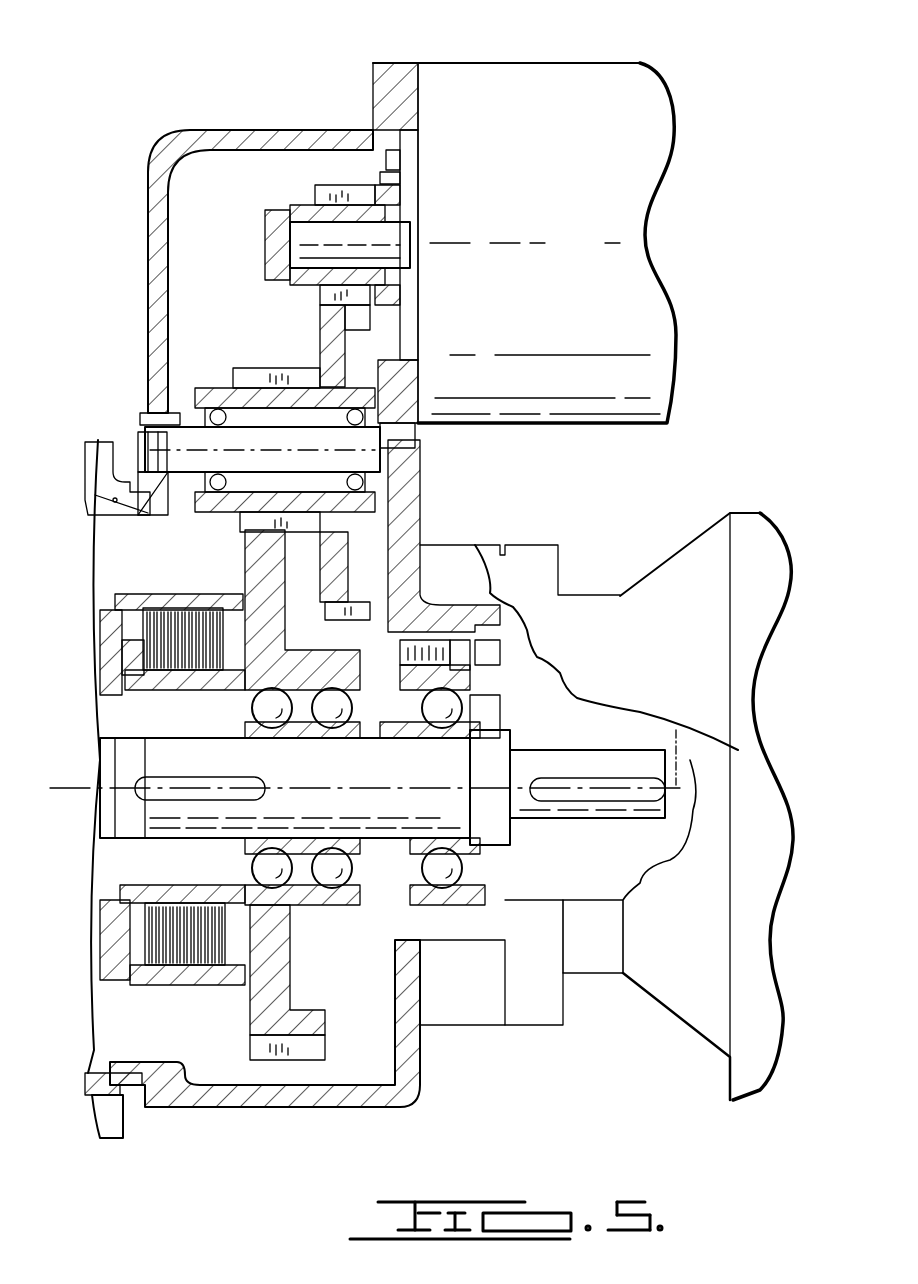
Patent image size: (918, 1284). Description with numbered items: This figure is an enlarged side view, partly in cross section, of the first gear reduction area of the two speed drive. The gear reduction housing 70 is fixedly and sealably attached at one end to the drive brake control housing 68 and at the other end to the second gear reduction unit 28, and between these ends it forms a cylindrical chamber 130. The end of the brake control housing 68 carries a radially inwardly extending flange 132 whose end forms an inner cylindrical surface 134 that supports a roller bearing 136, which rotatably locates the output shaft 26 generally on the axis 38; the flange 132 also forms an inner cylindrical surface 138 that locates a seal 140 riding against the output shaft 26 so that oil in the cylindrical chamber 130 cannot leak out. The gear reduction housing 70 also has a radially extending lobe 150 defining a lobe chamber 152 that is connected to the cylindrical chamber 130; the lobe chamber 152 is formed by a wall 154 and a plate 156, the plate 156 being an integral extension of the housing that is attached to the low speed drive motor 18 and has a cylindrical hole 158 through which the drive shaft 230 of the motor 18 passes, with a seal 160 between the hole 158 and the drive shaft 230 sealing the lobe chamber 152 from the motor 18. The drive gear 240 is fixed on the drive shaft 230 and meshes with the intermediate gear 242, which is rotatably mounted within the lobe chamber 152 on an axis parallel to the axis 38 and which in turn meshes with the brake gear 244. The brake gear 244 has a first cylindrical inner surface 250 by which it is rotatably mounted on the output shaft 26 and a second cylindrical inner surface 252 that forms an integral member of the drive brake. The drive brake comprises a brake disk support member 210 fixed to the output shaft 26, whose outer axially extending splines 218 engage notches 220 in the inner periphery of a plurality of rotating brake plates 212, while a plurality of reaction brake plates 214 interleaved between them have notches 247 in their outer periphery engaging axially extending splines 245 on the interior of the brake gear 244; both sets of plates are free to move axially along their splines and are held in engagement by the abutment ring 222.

The low speed drive motor 18 is at (592, 255).
The output shaft 26 is at (665, 808).
The second gear reduction unit 28 is at (760, 882).
The axis 38 is at (680, 730).
The drive brake control housing 68 is at (96, 445).
The gear reduction housing 70 is at (215, 1107).
The cylindrical chamber 130 is at (252, 795).
The radially inwardly extending flange 132 is at (405, 1022).
The inner cylindrical surface 134 is at (455, 892).
The roller bearing 136 is at (446, 860).
The inner cylindrical surface 138 is at (500, 875).
The seal 140 is at (490, 735).
The radially extending lobe 150 is at (221, 258).
The lobe chamber 152 is at (255, 337).
The wall 154 is at (162, 148).
The plate 156 is at (400, 72).
The cylindrical hole 158 is at (400, 170).
The seal 160 is at (400, 178).
The brake disk support member 210 is at (160, 712).
The rotating brake plates 212 is at (135, 925).
The reaction brake plates 214 is at (150, 942).
The axially extending splines 218 is at (145, 652).
The notches 220 is at (140, 685).
The abutment ring 222 is at (235, 952).
The drive shaft 230 is at (410, 252).
The drive gear 240 is at (333, 185).
The intermediate gear 242 is at (365, 530).
The brake gear 244 is at (252, 556).
The axially extending splines 245 is at (118, 604).
The notches 247 is at (125, 622).
The first cylindrical inner surface 250 is at (302, 885).
The second cylindrical inner surface 252 is at (172, 610).